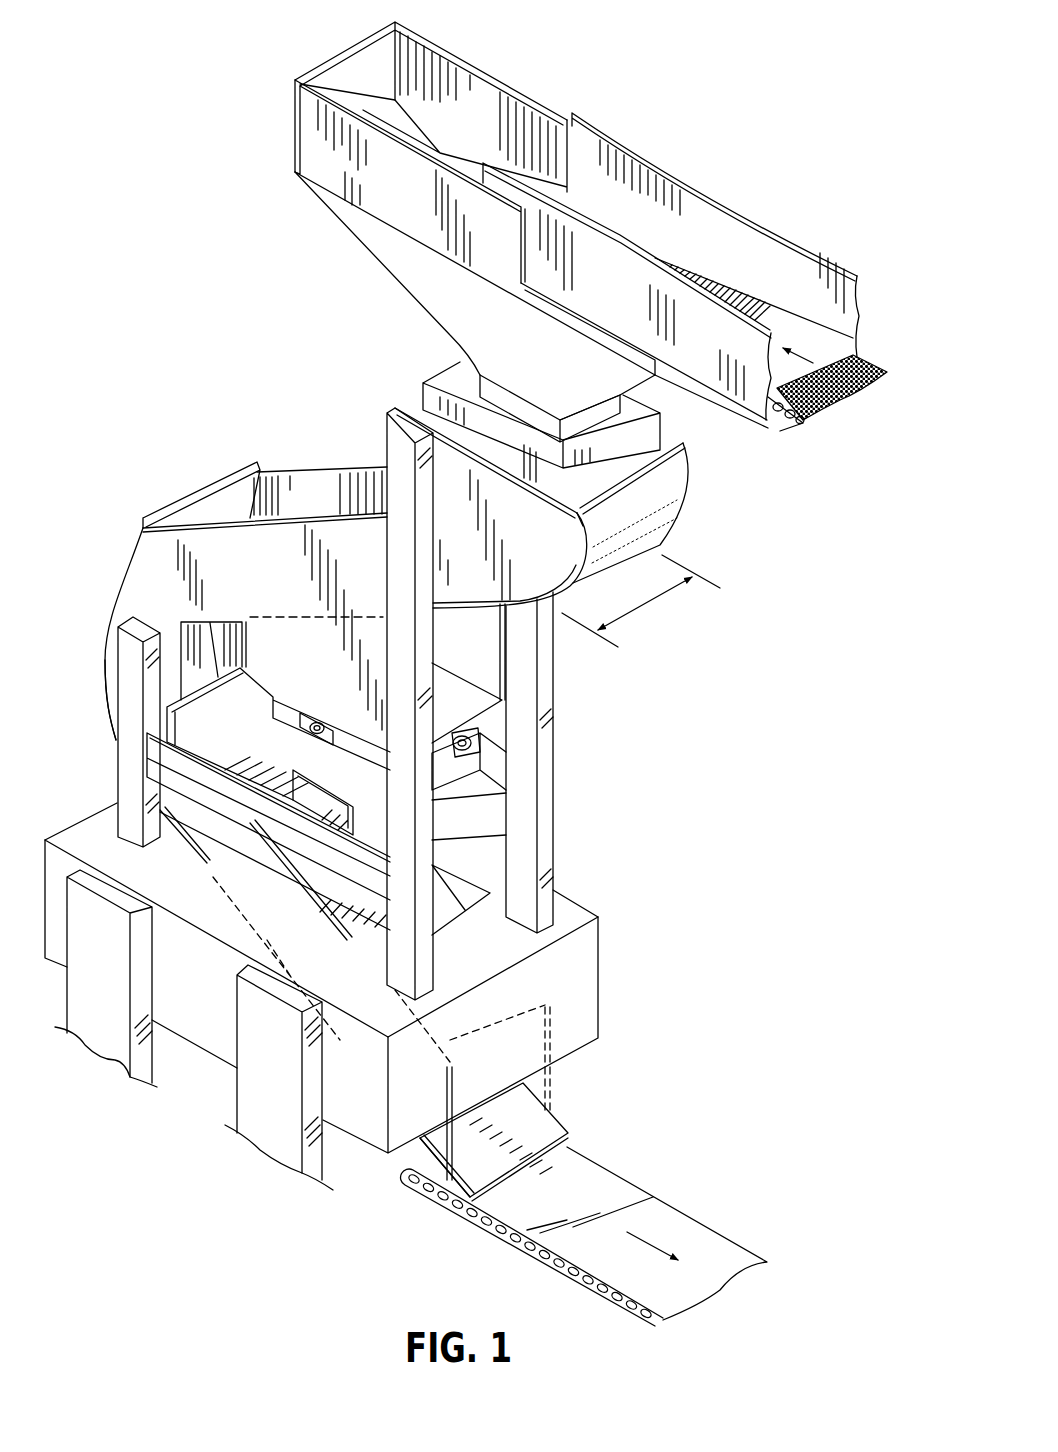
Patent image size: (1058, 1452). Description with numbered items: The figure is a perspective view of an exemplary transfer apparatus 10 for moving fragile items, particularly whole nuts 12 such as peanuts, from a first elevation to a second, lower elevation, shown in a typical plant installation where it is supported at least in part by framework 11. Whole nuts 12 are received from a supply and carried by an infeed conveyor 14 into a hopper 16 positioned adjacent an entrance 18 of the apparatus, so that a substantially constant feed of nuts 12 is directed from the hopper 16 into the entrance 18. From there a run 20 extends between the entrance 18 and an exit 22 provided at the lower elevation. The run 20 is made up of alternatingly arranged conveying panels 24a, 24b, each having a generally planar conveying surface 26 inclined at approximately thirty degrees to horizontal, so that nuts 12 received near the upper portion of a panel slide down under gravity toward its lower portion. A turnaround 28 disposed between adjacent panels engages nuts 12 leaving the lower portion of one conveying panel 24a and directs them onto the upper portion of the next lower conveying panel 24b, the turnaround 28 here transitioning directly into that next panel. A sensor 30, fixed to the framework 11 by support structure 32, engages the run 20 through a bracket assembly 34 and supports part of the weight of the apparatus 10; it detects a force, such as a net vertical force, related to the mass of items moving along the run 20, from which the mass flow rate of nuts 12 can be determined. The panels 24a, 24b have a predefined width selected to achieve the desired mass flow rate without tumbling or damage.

The transfer apparatus 10 is at (128, 183).
The framework 11 is at (120, 755).
The whole nuts 12 is at (873, 362).
The infeed conveyor 14 is at (708, 188).
The hopper 16 is at (445, 343).
The entrance 18 is at (673, 423).
The run 20 is at (148, 588).
The exit 22 is at (562, 1118).
The conveying panel 24a is at (480, 613).
The conveying panel 24b is at (490, 1163).
The conveying surface 26 is at (373, 930).
The turnaround 28 is at (107, 687).
The sensor 30 is at (472, 745).
The support structure 32 is at (468, 780).
The bracket assembly 34 is at (278, 680).